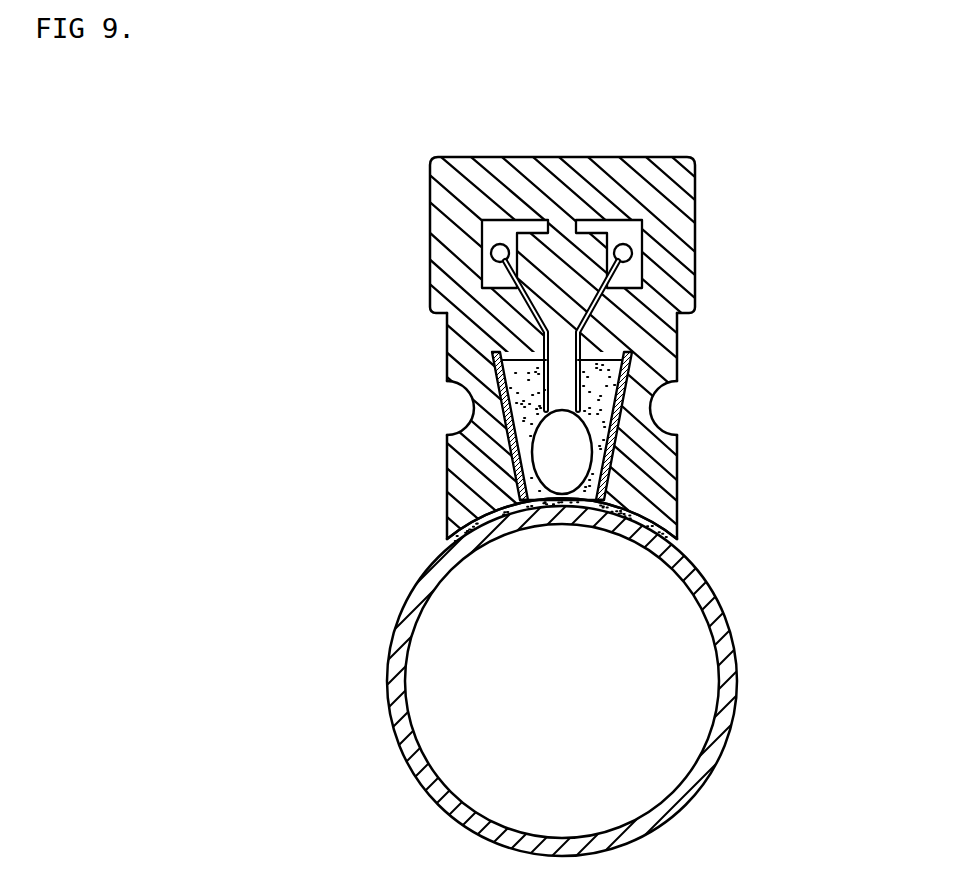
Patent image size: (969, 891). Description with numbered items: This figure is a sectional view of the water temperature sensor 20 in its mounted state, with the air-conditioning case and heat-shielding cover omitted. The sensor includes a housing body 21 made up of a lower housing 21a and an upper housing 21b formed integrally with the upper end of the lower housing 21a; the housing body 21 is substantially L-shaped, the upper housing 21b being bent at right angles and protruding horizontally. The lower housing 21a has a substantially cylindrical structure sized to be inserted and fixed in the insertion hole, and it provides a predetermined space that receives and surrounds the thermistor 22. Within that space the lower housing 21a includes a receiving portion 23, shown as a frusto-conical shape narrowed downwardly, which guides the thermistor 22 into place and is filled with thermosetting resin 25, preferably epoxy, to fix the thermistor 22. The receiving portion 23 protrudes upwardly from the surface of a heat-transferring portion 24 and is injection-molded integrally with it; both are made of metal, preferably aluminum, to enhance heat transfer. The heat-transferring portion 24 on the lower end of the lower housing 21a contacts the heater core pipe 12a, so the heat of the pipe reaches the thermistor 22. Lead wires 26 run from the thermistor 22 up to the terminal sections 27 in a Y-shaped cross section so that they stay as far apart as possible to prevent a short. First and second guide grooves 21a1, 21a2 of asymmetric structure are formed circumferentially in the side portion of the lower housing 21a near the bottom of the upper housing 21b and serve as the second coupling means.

The heater core pipe 12a is at (728, 670).
The water temperature sensor 20 is at (698, 219).
The housing body 21 is at (802, 272).
The lower housing 21a is at (677, 343).
The upper housing 21b is at (697, 260).
The first guide groove 21a1 is at (653, 403).
The second guide groove 21a2 is at (472, 402).
The thermistor 22 is at (553, 458).
The receiving portion 23 is at (617, 450).
The heat-transferring portion 24 is at (653, 517).
The thermosetting resin 25 is at (520, 361).
The lead wires 26 is at (581, 316).
The terminal sections 27 is at (620, 217).